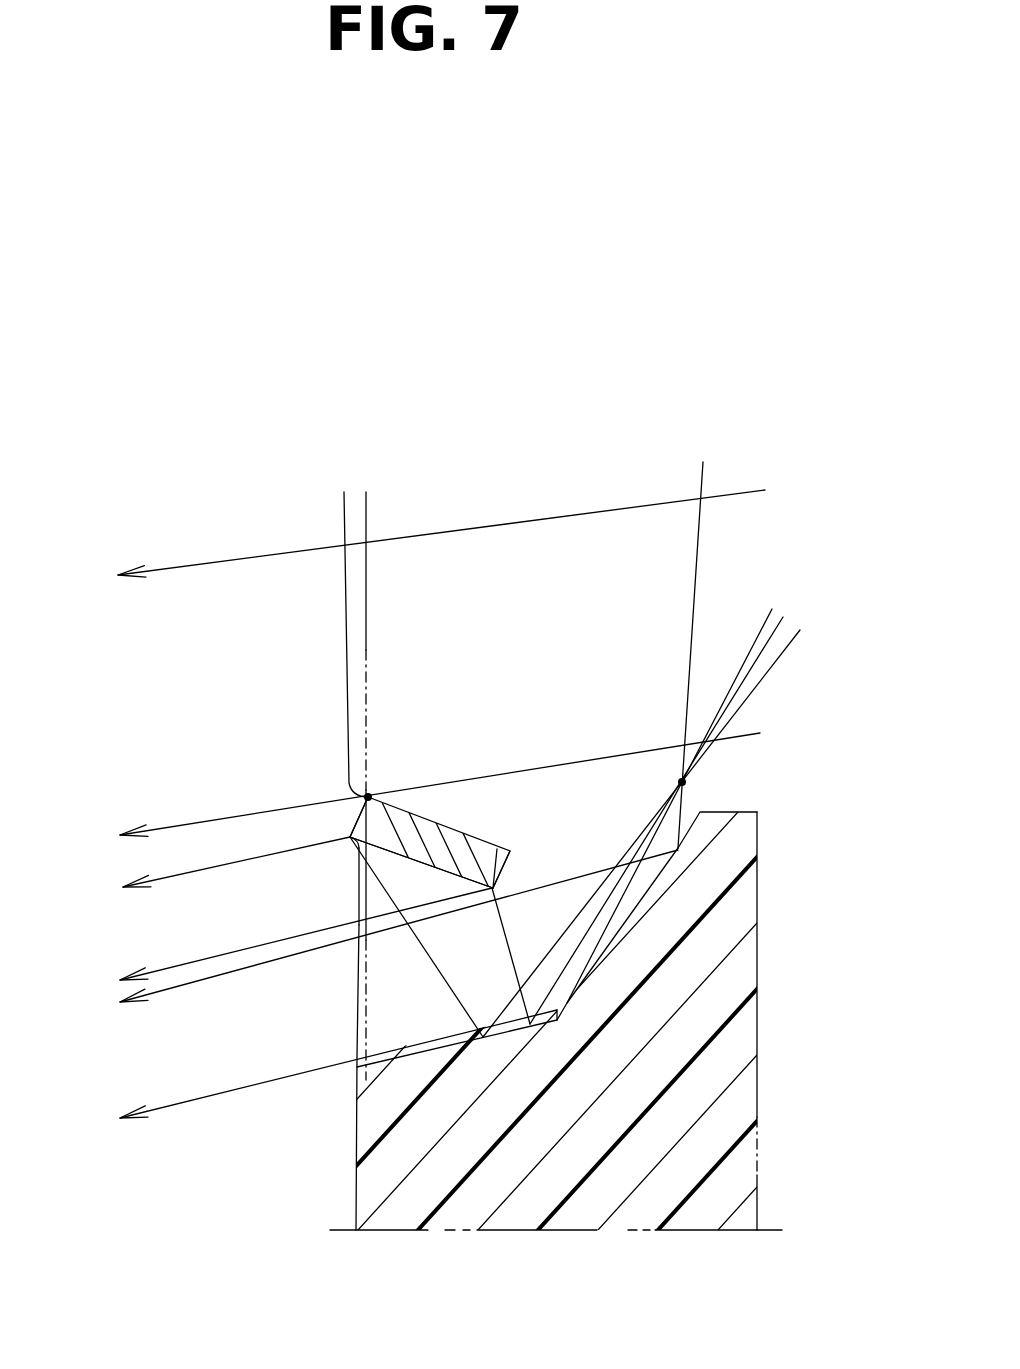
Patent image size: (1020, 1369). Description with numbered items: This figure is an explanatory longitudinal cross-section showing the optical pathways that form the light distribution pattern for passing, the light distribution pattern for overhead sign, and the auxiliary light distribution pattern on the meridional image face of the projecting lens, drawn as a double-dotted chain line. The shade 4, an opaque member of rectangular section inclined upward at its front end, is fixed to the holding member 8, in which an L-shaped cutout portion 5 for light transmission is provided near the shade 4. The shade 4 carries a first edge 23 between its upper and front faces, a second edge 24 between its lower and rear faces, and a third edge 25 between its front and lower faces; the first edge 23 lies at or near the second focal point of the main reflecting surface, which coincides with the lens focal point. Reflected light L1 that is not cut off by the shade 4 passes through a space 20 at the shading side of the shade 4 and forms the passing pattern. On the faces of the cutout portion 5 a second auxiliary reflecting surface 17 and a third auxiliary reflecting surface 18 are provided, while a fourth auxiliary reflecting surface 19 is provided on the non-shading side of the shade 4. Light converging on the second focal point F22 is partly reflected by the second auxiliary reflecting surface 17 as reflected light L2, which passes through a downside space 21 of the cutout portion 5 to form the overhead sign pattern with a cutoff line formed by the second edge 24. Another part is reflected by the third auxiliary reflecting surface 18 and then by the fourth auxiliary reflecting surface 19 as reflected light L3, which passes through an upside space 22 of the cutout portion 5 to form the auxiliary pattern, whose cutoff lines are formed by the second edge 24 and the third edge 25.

The shade 4 is at (463, 830).
The cutout portion 5 is at (545, 934).
The holding member 8 is at (517, 1230).
The second auxiliary reflecting surface 17 is at (698, 810).
The third auxiliary reflecting surface 18 is at (418, 1050).
The fourth auxiliary reflecting surface 19 is at (456, 878).
The space at the shading side of the shade 20 is at (348, 617).
The downside space of the cutout portion 21 is at (360, 1067).
The upside space of the cutout portion 22 is at (358, 867).
The first edge 23 is at (369, 794).
The second edge 24 is at (497, 886).
The third edge 25 is at (350, 837).
The second focal point of the first auxiliary reflecting surface F22 is at (680, 782).
The reflected light L1 is at (199, 572).
The reflected light L2 is at (172, 988).
The reflected light L3 is at (172, 880).